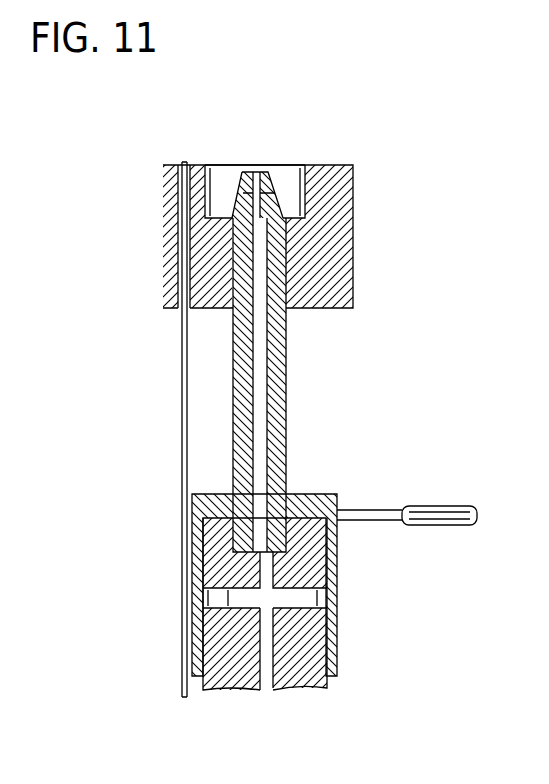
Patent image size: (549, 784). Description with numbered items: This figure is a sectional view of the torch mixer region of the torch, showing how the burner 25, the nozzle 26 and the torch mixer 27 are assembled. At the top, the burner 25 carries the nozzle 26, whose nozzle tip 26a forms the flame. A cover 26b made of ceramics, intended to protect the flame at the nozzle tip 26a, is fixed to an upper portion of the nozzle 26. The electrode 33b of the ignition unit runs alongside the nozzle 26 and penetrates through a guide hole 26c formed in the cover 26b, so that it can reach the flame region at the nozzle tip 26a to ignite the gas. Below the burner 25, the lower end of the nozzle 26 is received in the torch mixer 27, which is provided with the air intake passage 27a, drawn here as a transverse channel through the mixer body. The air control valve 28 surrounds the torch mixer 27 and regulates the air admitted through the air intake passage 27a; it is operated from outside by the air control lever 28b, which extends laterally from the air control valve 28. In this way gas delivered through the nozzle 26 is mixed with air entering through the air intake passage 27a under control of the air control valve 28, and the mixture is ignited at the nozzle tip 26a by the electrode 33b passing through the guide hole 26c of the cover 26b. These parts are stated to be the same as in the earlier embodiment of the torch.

The burner 25 is at (360, 245).
The nozzle 26 is at (288, 398).
The nozzle tip 26a is at (241, 170).
The cover 26b is at (338, 166).
The guide hole 26c is at (178, 251).
The electrode 33b is at (184, 162).
The air control valve 28 is at (316, 496).
The air control lever 28b is at (457, 507).
The torch mixer 27 is at (296, 689).
The air intake passage 27a is at (316, 597).